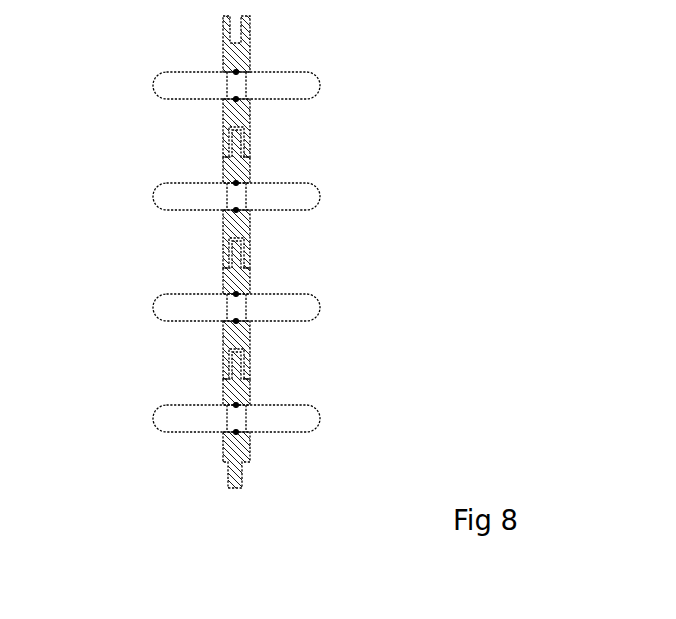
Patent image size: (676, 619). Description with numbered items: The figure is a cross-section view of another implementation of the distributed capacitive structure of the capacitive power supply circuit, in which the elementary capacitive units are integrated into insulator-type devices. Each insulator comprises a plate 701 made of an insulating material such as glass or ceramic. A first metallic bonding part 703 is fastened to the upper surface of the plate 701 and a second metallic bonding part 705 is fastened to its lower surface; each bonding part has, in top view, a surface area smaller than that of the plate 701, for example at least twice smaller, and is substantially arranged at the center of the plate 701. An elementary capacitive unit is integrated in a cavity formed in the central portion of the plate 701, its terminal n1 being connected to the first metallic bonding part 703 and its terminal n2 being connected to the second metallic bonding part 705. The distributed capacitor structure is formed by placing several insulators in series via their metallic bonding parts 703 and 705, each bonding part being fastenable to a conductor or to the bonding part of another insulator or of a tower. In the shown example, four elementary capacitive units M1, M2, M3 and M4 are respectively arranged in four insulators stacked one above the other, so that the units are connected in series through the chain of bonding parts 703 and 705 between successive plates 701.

The plate 701 is at (153, 85).
The first metallic bonding part 703 is at (223, 50).
The second metallic bonding part 705 is at (223, 110).
The terminal n1 is at (238, 72).
The terminal n2 is at (250, 109).
The elementary capacitive unit M1 is at (246, 87).
The elementary capacitive unit M2 is at (246, 198).
The elementary capacitive unit M3 is at (246, 309).
The elementary capacitive unit M4 is at (246, 420).